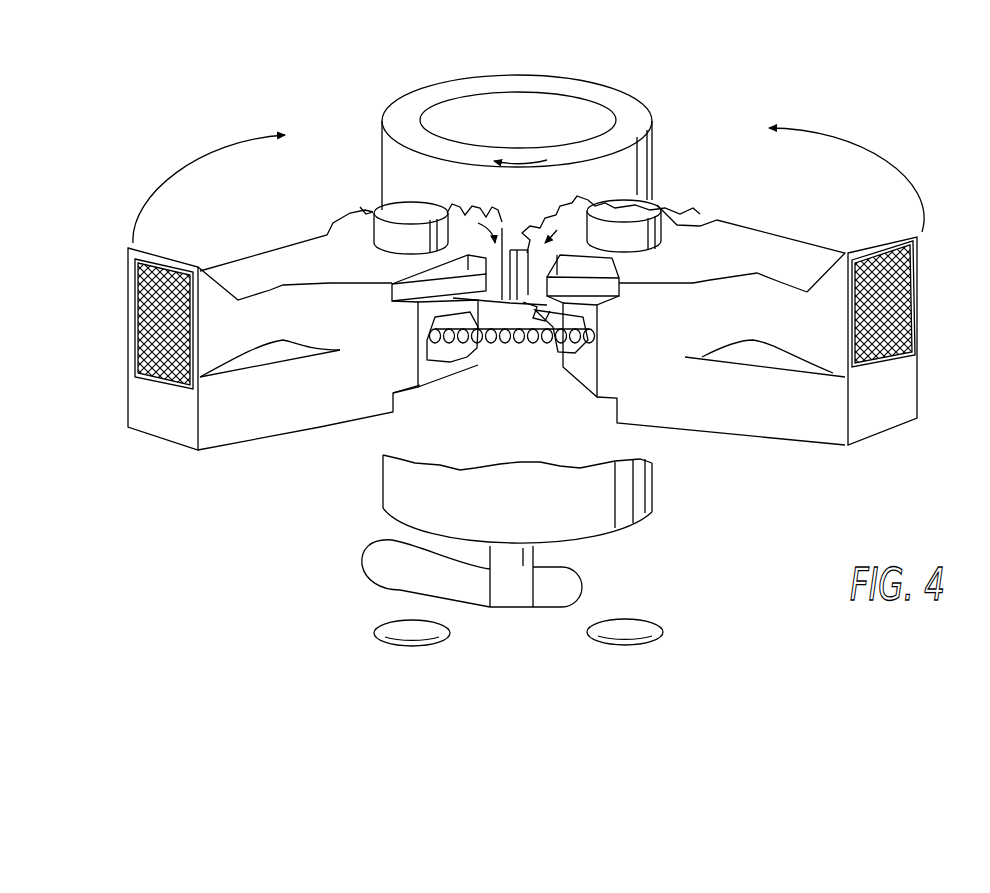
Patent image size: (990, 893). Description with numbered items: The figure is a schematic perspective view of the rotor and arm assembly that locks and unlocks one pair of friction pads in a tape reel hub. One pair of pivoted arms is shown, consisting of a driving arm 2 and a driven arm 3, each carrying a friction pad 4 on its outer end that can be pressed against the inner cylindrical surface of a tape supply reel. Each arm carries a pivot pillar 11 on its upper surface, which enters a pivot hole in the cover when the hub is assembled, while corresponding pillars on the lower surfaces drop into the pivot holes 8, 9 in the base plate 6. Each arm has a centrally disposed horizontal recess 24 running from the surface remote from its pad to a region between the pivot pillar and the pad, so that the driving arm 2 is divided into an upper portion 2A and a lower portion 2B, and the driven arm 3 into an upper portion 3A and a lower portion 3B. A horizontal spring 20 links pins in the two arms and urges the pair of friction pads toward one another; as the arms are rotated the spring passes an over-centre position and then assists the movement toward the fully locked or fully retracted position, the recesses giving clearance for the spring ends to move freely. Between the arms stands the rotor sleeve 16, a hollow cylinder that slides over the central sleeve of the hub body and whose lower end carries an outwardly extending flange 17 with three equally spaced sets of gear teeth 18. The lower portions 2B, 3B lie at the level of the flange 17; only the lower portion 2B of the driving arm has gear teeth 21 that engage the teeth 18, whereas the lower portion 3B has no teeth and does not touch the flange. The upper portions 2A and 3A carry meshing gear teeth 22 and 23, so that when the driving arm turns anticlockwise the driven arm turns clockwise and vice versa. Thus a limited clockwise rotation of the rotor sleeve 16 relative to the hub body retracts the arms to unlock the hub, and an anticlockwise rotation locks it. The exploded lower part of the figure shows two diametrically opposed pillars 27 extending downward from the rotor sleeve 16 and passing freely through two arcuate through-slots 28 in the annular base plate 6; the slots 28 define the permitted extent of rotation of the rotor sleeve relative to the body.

The driving arm 2 is at (807, 435).
The driven arm 3 is at (223, 437).
The friction pad 4 is at (150, 328).
The base plate 6 is at (350, 543).
The pivot hole 8 is at (645, 628).
The pivot hole 9 is at (395, 628).
The pivot pillar 11 is at (410, 198).
The rotor sleeve 16 is at (617, 103).
The flange 17 is at (503, 253).
The gear teeth 18 is at (537, 341).
The spring 20 is at (430, 347).
The gear teeth 21 is at (548, 316).
The gear teeth 22 is at (545, 212).
The gear teeth 23 is at (480, 213).
The horizontal recess 24 is at (500, 344).
The pillar 27 is at (525, 585).
The arcuate through-slot 28 is at (467, 598).
The upper portion of driving arm 2A is at (612, 274).
The upper portion of driven arm 3A is at (410, 277).
The lower portion of driving arm 2B is at (565, 373).
The lower portion of driven arm 3B is at (445, 373).